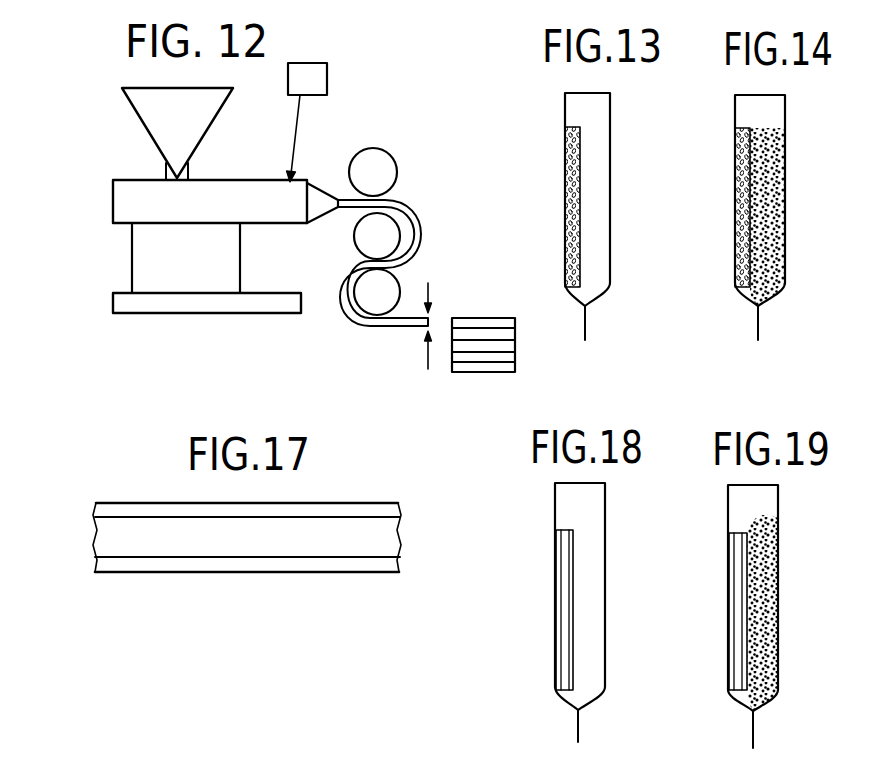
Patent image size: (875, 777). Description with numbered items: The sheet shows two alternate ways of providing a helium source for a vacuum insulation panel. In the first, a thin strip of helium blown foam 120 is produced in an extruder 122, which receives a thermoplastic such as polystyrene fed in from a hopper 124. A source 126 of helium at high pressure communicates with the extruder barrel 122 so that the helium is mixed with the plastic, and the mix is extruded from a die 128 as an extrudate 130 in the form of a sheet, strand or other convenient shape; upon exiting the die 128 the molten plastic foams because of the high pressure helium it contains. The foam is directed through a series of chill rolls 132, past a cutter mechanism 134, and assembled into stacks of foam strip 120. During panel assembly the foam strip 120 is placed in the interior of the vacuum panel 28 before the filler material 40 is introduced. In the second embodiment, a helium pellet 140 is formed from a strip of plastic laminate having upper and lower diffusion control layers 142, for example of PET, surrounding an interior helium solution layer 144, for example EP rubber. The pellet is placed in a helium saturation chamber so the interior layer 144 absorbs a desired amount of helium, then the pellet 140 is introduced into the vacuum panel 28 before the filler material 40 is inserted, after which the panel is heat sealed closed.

In FIG. 13, the test tube 28 is at (610, 141).
In FIG. 14, the test tube 28 is at (785, 195).
In FIG. 18, the test tube 28 is at (605, 601).
In FIG. 19, the test tube 28 is at (778, 615).
In FIG. 14, the filler material 40 is at (767, 153).
In FIG. 19, the filler material 40 is at (762, 578).
In FIG. 12, the helium blown foam strip 120 is at (500, 322).
In FIG. 13, the helium blown foam strip 120 is at (565, 157).
In FIG. 14, the helium blown foam strip 120 is at (735, 185).
In FIG. 12, the extruder 122 is at (213, 190).
In FIG. 12, the hopper 124 is at (142, 121).
In FIG. 12, the helium source 126 is at (327, 79).
In FIG. 12, the die 128 is at (318, 197).
In FIG. 12, the extrudate 130 is at (392, 206).
In FIG. 12, the chill rolls 132 is at (380, 160).
In FIG. 12, the cutter mechanism 134 is at (428, 290).
In FIG. 17, the helium pellet 140 is at (390, 488).
In FIG. 18, the helium pellet 140 is at (557, 591).
In FIG. 19, the helium pellet 140 is at (733, 563).
In FIG. 17, the diffusion control layer 142 is at (128, 503).
In FIG. 17, the helium solution layer 144 is at (253, 547).